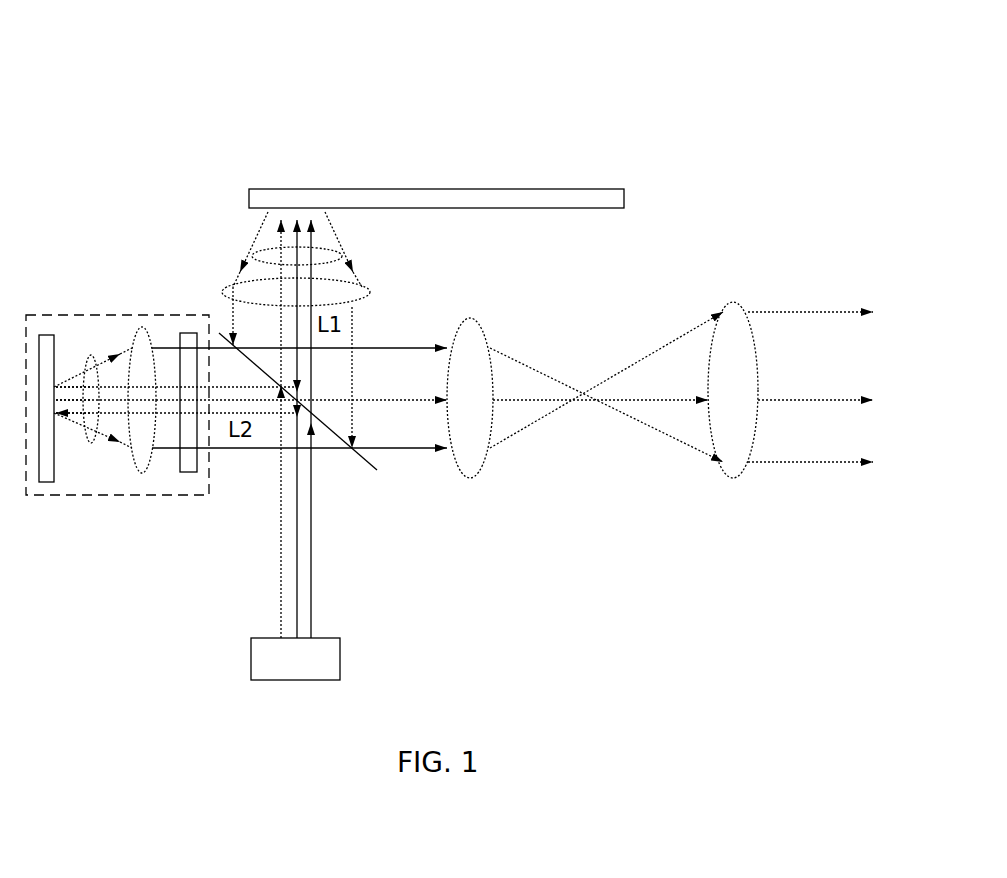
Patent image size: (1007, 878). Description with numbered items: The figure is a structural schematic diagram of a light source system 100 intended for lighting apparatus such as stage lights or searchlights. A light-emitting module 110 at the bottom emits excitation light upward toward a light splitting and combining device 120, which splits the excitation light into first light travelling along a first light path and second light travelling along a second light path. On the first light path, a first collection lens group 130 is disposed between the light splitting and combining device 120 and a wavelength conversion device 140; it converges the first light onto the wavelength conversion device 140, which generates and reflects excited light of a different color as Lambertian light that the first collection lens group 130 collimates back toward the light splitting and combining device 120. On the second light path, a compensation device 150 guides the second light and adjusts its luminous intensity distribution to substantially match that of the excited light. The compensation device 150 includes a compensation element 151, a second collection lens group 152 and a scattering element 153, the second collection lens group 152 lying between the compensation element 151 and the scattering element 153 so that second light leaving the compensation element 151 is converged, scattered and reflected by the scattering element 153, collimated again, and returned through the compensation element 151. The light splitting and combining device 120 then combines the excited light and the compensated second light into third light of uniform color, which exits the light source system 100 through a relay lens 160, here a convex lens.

The light source system 100 is at (258, 50).
The light-emitting module 110 is at (327, 637).
The light splitting and combining device 120 is at (367, 463).
The first collection lens group 130 is at (362, 283).
The wavelength conversion device 140 is at (480, 195).
The compensation device 150 is at (116, 381).
The compensation element 151 is at (187, 473).
The second collection lens group 152 is at (148, 326).
The scattering element 153 is at (48, 335).
The relay lens 160 is at (477, 332).